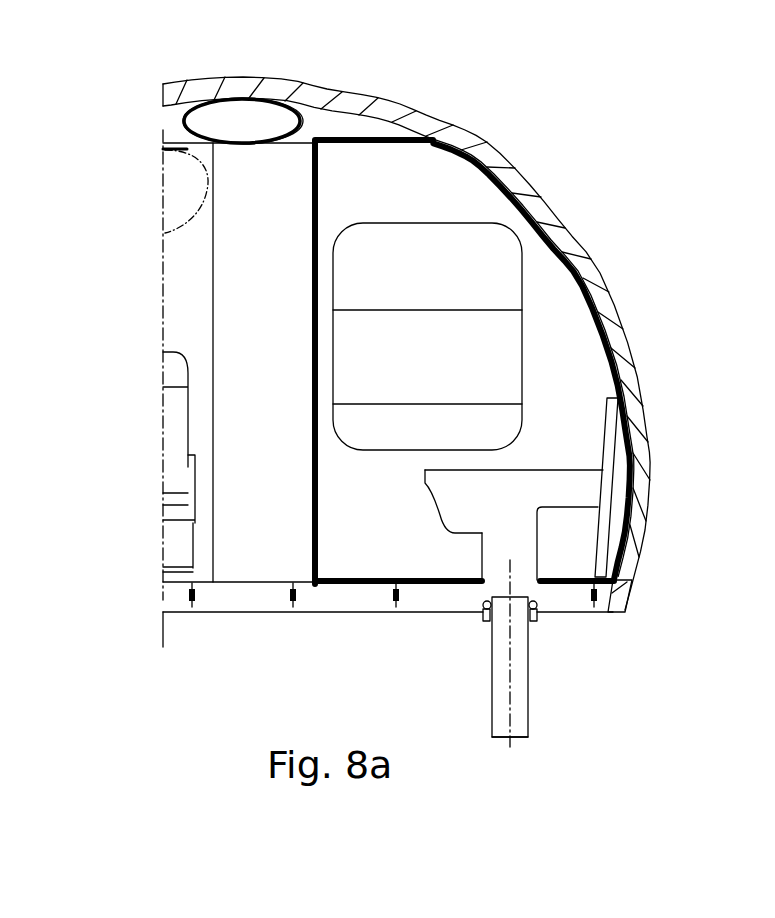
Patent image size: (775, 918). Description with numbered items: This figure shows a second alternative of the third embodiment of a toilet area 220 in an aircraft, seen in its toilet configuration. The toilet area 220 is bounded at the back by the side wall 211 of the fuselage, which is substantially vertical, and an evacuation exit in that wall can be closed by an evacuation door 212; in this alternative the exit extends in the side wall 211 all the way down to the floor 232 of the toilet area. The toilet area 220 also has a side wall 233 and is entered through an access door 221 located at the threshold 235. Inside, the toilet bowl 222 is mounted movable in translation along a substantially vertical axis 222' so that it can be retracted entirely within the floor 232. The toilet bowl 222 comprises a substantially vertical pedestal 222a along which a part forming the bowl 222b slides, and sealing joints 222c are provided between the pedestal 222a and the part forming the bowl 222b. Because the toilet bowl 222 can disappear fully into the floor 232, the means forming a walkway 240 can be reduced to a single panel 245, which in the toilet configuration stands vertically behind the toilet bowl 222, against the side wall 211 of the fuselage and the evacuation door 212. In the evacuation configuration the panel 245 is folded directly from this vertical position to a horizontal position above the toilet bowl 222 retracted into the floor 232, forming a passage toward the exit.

The side wall 211 is at (620, 595).
The evacuation door 212 is at (540, 207).
The toilet area 220 is at (391, 631).
The access door 221 is at (293, 163).
The toilet bowl 222 is at (573, 526).
The pedestal 222a is at (500, 702).
The part forming the bowl 222b is at (452, 495).
The sealing joints 222c is at (487, 614).
The vertical axis 222' is at (546, 758).
The floor 232 is at (373, 578).
The side wall of the toilet area 233 is at (412, 168).
The threshold 235 is at (347, 582).
The means forming a walkway 240 is at (580, 553).
The panel 245 is at (608, 432).